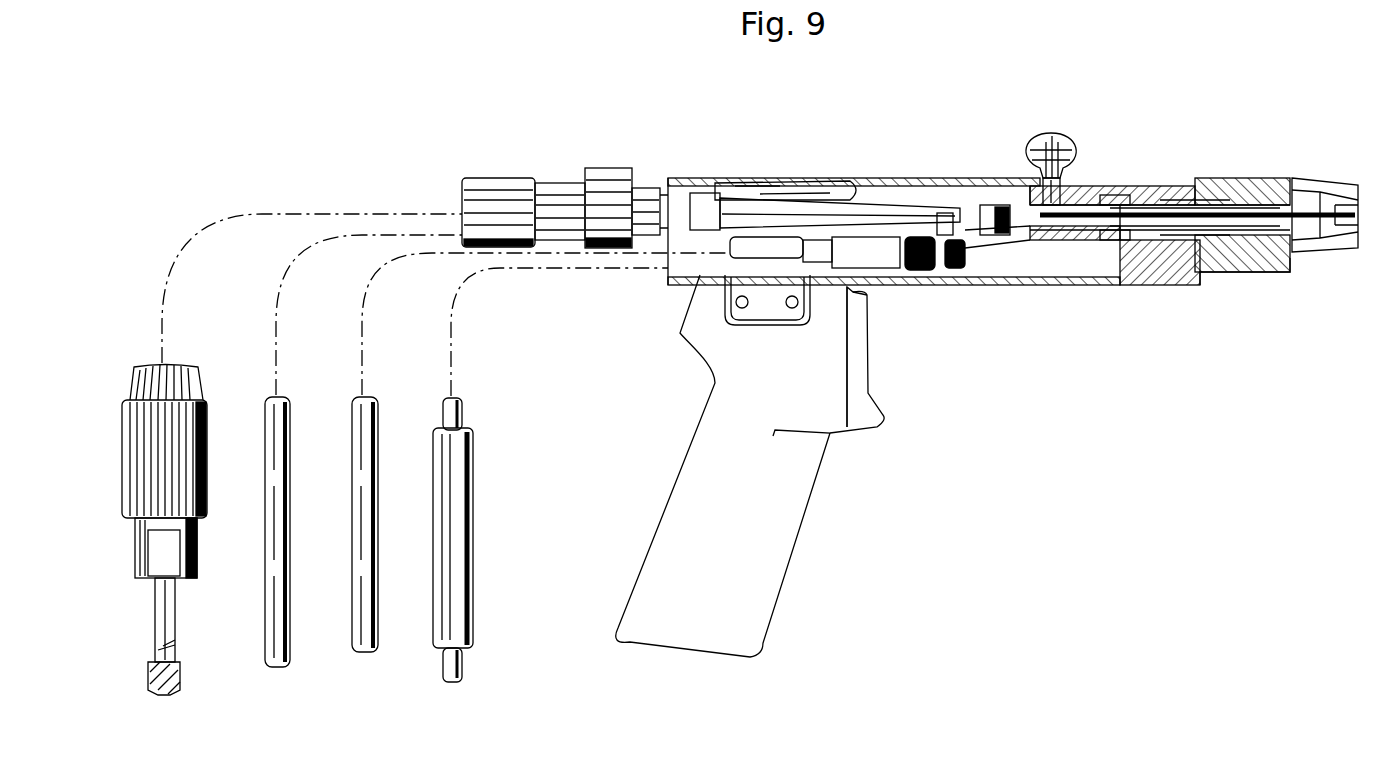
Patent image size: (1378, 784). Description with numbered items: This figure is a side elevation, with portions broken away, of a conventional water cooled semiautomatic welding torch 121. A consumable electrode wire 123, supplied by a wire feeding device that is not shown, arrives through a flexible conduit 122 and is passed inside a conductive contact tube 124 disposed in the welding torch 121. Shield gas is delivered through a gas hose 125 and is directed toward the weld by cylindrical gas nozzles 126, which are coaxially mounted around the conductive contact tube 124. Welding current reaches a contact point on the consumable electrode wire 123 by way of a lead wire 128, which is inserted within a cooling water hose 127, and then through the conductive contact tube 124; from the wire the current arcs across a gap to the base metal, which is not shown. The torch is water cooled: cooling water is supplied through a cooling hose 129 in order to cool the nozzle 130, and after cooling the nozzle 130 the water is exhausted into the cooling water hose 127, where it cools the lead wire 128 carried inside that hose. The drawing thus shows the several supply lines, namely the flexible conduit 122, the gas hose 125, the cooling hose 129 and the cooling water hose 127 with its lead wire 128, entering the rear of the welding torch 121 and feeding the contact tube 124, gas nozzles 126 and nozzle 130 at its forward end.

The welding torch 121 is at (948, 308).
The flexible conduit 122 is at (135, 470).
The consumable electrode wire 123 is at (1350, 257).
The conductive contact tube 124 is at (1212, 200).
The gas hose 125 is at (290, 480).
The cylindrical gas nozzles 126 is at (1112, 200).
The cooling water hose 127 is at (473, 478).
The lead wire 128 is at (462, 410).
The cooling hose 129 is at (378, 480).
The nozzle 130 is at (1315, 182).